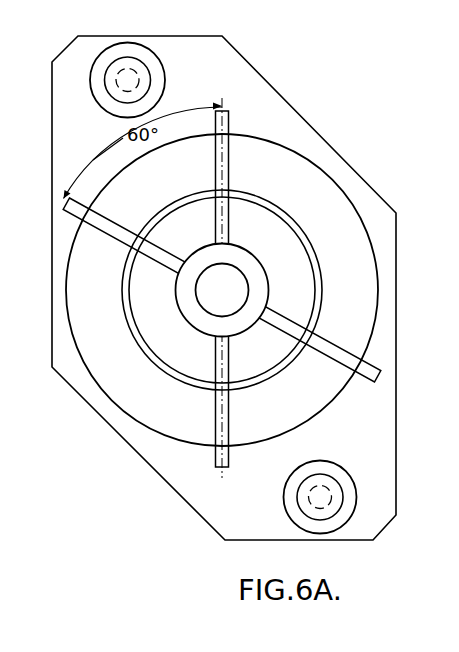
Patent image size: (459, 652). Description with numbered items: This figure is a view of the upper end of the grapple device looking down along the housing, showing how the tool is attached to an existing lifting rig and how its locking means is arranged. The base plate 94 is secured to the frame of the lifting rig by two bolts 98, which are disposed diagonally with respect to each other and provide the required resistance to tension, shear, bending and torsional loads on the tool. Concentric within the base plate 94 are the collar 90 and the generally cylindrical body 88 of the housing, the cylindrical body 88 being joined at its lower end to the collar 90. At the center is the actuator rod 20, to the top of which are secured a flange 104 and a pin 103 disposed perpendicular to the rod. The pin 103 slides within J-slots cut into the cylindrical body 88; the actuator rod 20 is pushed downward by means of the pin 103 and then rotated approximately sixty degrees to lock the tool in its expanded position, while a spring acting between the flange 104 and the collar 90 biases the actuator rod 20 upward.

The base plate 94 is at (158, 36).
The bolts 98 is at (142, 80).
The collar 90 is at (256, 134).
The cylindrical body 88 is at (263, 194).
The flange 104 is at (313, 270).
The actuator rod 20 is at (191, 317).
The pin 103 is at (363, 374).